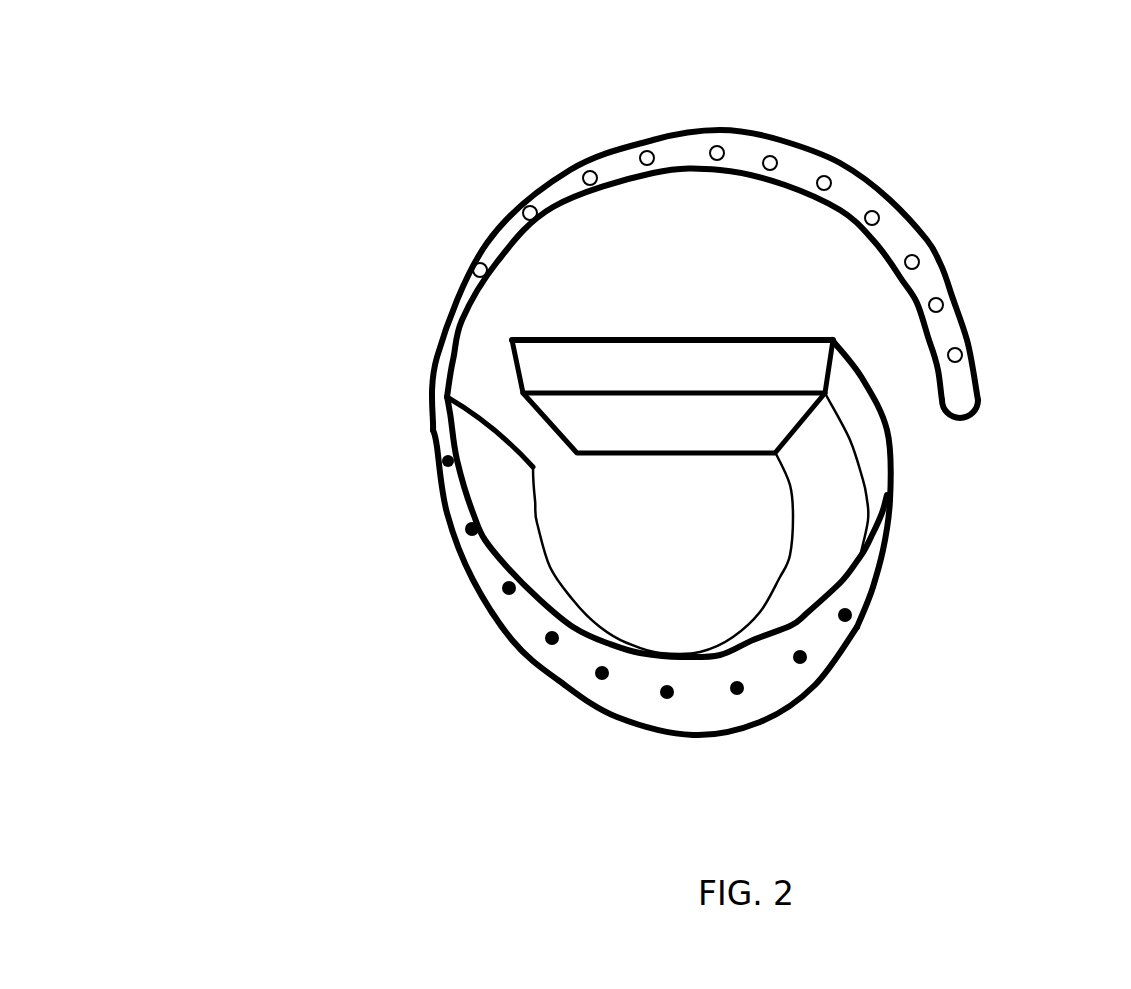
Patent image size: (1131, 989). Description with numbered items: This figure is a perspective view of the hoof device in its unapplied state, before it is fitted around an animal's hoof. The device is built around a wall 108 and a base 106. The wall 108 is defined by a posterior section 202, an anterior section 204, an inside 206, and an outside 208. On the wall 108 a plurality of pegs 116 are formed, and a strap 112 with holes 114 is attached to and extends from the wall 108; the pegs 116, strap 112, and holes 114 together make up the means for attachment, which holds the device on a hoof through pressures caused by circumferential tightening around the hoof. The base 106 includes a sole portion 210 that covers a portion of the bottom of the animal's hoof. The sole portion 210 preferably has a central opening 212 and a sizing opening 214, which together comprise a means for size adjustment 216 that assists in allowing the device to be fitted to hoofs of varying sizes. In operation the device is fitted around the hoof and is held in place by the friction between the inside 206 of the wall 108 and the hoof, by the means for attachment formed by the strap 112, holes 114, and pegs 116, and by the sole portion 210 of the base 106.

The base 106 is at (686, 607).
The wall 108 is at (527, 625).
The strap 112 is at (770, 236).
The holes 114 is at (915, 263).
The pegs 116 is at (812, 665).
The posterior section 202 is at (590, 367).
The anterior section 204 is at (677, 681).
The inside 206 is at (858, 435).
The outside 208 is at (855, 594).
The sole portion 210 is at (635, 418).
The central opening 212 is at (620, 547).
The sizing opening 214 is at (500, 423).
The means for size adjustment 216 is at (480, 477).